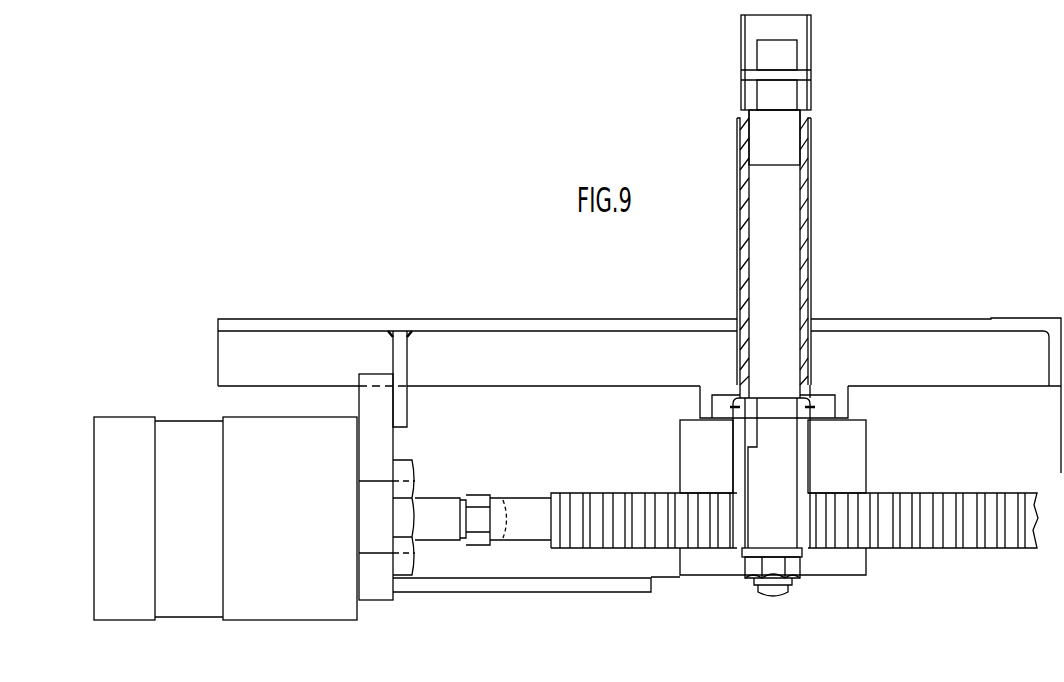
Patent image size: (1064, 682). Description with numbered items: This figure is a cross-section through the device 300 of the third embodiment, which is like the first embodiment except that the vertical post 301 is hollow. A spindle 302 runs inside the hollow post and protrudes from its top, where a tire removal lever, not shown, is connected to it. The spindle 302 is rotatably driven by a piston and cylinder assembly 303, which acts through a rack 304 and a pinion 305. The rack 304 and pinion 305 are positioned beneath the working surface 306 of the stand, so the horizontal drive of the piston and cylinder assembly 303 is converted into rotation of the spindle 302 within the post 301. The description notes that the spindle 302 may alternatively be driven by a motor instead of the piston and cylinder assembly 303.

The device 300 is at (697, 304).
The vertical post 301 is at (805, 268).
The spindle 302 is at (783, 236).
The piston and cylinder assembly 303 is at (207, 432).
The rack 304 is at (948, 500).
The pinion 305 is at (822, 538).
The working surface 306 is at (936, 314).